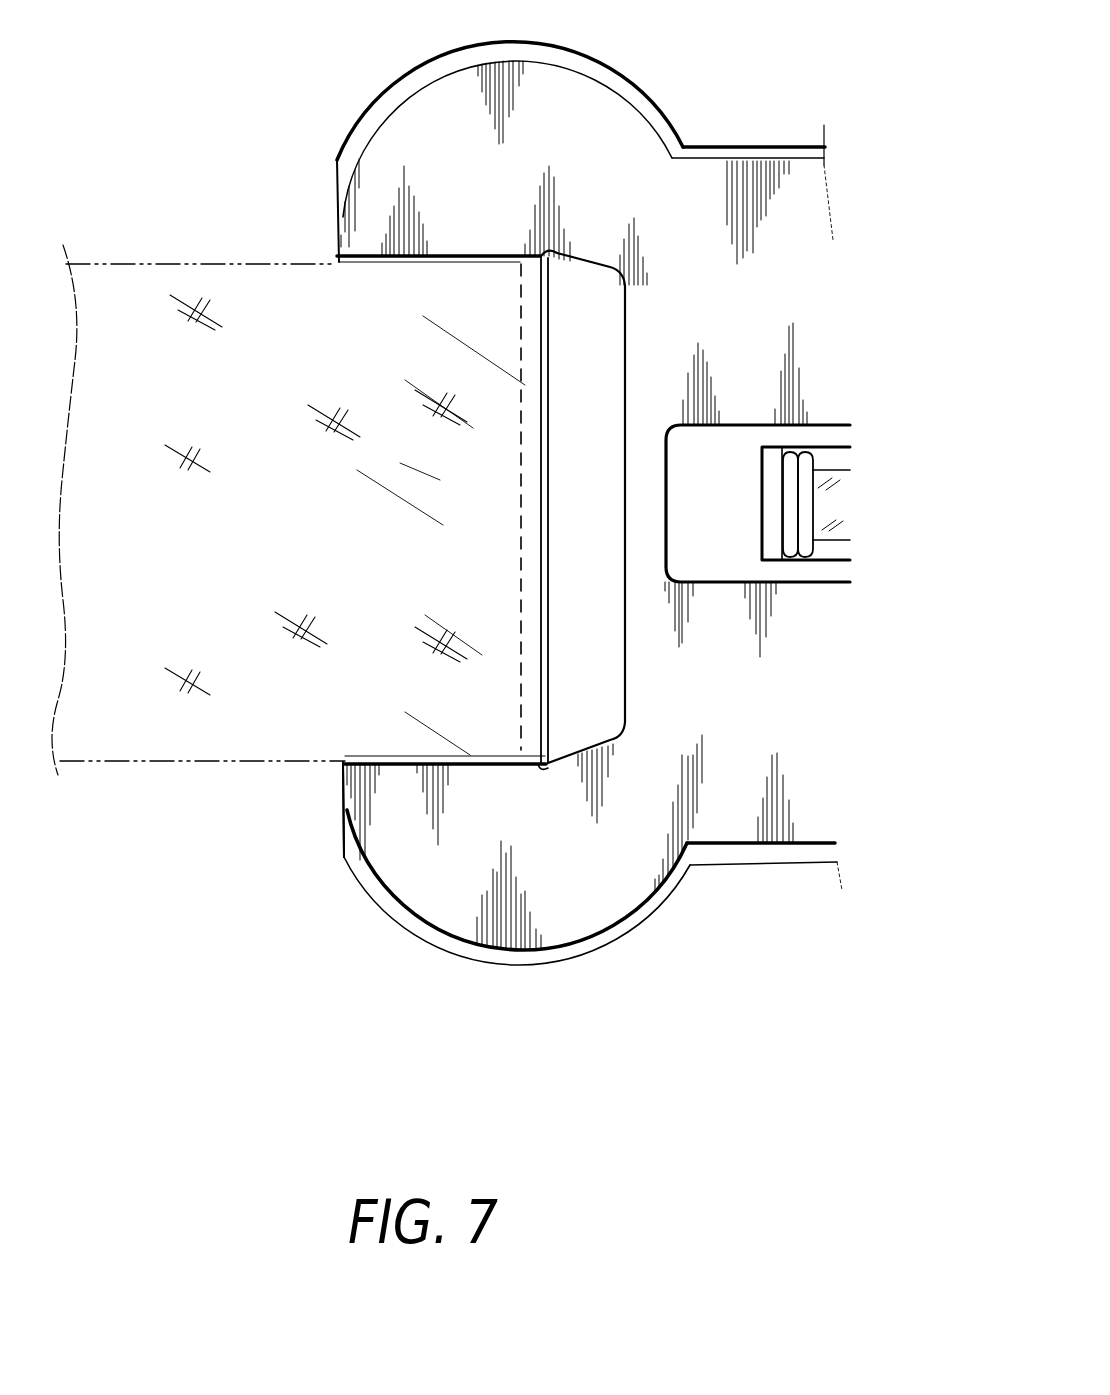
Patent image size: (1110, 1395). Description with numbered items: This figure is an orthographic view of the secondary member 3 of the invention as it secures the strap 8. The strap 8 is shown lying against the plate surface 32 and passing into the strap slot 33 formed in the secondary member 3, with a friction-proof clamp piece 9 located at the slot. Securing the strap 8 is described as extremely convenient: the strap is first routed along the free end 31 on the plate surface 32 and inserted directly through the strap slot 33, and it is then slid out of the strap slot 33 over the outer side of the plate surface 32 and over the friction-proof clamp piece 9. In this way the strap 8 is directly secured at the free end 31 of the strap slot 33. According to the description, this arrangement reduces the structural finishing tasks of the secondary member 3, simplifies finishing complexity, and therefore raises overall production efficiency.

The secondary member 3 is at (753, 870).
The strap 8 is at (167, 745).
The friction-proof clamp piece 9 is at (355, 258).
The free end 31 is at (820, 743).
The plate surface 32 is at (345, 797).
The strap slot 33 is at (598, 745).